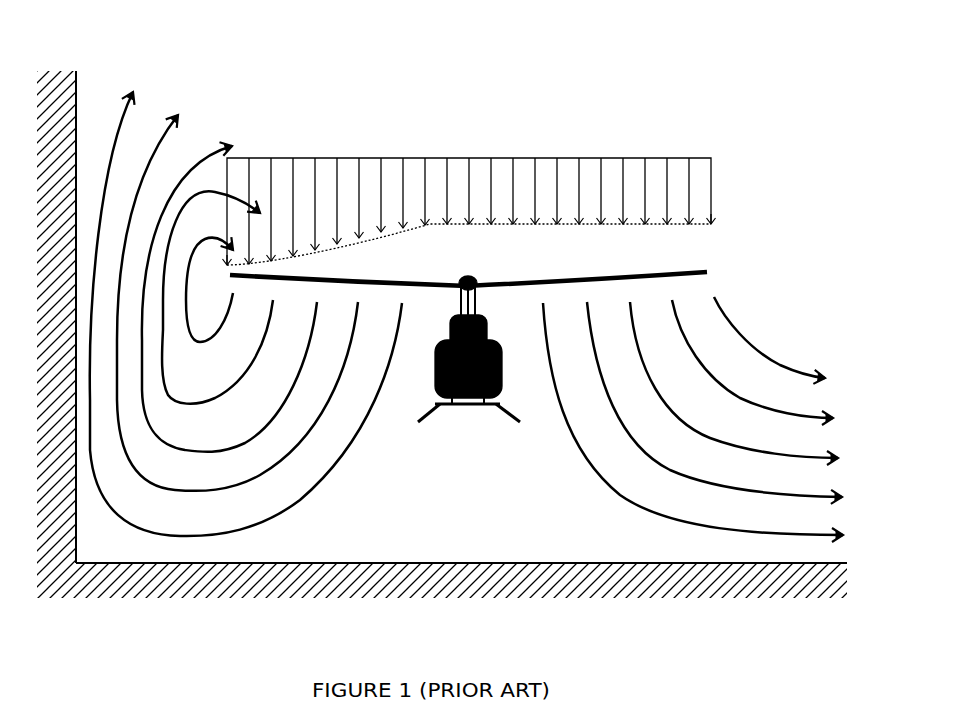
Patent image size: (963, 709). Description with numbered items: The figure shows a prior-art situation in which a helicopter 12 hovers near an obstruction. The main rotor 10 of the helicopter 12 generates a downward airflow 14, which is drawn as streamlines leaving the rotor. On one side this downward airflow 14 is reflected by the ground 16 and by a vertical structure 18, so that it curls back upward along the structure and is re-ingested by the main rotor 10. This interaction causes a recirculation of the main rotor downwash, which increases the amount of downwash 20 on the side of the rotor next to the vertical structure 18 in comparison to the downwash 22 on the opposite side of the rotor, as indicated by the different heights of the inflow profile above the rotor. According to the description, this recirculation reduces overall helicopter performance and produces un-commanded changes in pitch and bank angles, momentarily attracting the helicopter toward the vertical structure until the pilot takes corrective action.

The main rotor 10 is at (505, 285).
The helicopter 12 is at (478, 395).
The downward airflow 14 is at (187, 158).
The ground 16 is at (373, 562).
The vertical structure 18 is at (77, 92).
The downwash 20 is at (293, 200).
The downwash 22 is at (711, 190).